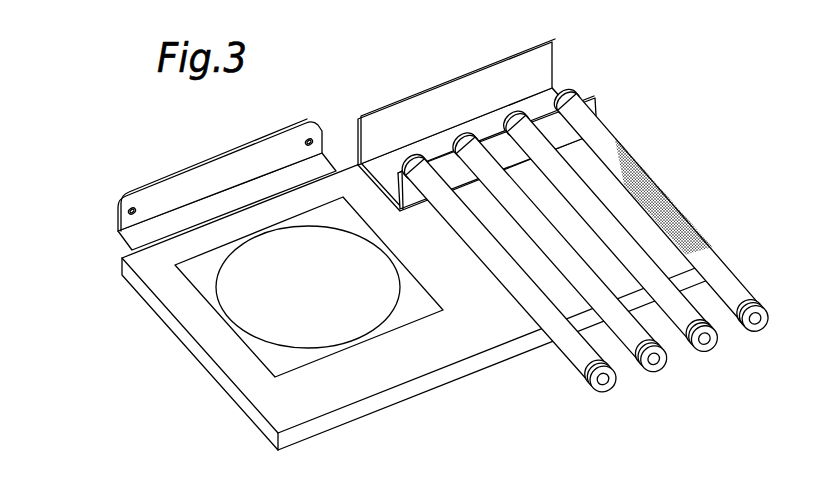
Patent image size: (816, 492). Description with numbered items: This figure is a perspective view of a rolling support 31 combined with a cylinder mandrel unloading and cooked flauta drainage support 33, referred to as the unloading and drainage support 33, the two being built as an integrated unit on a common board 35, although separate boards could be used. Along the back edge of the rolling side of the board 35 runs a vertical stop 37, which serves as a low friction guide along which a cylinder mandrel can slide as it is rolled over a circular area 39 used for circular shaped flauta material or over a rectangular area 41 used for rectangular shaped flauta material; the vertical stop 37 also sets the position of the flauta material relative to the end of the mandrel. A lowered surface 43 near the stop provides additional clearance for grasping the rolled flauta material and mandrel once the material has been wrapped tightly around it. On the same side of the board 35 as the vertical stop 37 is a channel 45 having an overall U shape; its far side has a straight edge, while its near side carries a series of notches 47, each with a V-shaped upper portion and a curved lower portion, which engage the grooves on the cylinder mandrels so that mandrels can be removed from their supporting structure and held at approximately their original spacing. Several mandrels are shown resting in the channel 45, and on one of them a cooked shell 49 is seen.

The rolling support 31 is at (189, 177).
The unloading and drainage support 33 is at (479, 106).
The board 35 is at (278, 451).
The vertical stop 37 is at (89, 211).
The circular area 39 is at (394, 312).
The rectangular area 41 is at (432, 316).
The lowered surface 43 is at (134, 249).
The channel 45 is at (490, 89).
The notches 47 is at (552, 106).
The cooked shell 49 is at (662, 160).